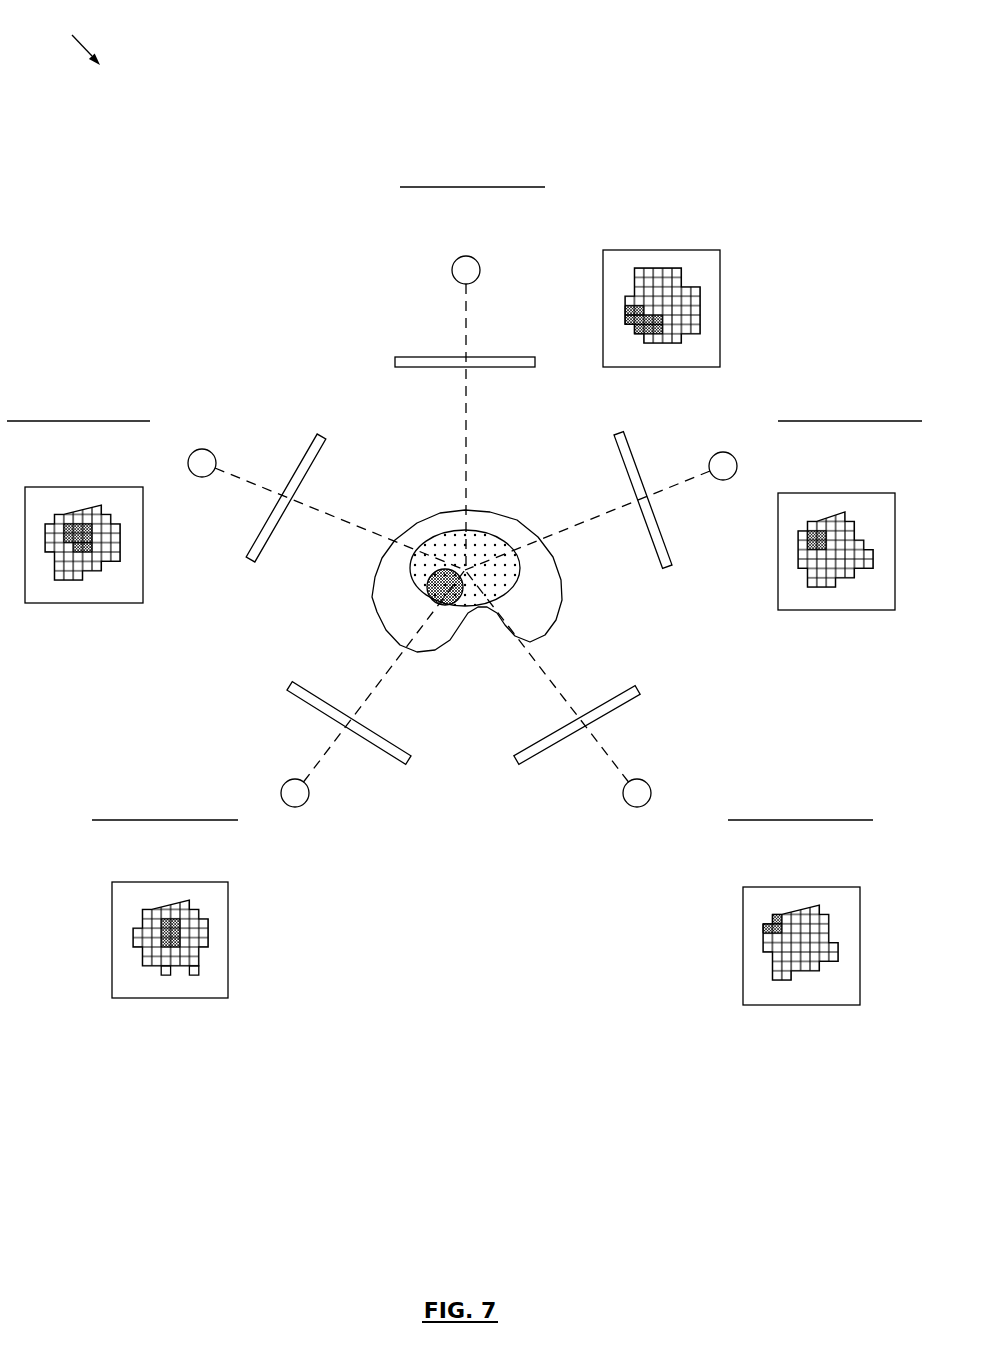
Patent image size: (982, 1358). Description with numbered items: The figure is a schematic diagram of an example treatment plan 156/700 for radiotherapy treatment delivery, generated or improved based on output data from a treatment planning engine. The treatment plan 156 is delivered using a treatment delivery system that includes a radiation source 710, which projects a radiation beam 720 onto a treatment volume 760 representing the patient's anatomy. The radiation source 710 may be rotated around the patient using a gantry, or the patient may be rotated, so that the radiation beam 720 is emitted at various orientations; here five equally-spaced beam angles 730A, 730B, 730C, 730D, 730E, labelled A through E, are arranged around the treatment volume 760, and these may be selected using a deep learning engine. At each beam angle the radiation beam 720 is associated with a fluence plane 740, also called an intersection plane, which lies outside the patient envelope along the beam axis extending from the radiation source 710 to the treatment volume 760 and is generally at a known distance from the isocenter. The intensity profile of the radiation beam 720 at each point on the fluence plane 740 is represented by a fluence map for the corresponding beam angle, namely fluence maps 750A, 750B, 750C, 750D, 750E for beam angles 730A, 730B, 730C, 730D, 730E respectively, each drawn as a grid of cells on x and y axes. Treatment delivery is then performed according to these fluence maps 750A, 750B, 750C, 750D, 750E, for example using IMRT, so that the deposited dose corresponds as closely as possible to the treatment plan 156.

The treatment plan 156 is at (61, 36).
The treatment plan 700 is at (61, 36).
The radiation source 710 is at (466, 259).
The radiation beam 720 is at (462, 310).
The beam angle A 730A is at (517, 160).
The beam angle B 730B is at (890, 397).
The beam angle C 730C is at (847, 792).
The beam angle D 730D is at (179, 794).
The beam angle E 730E is at (122, 394).
The fluence plane 740 is at (518, 356).
The fluence map A 750A is at (688, 259).
The fluence map B 750B is at (862, 498).
The fluence map C 750C is at (832, 896).
The fluence map D 750D is at (142, 891).
The fluence map E 750E is at (49, 496).
The treatment volume 760 is at (347, 618).